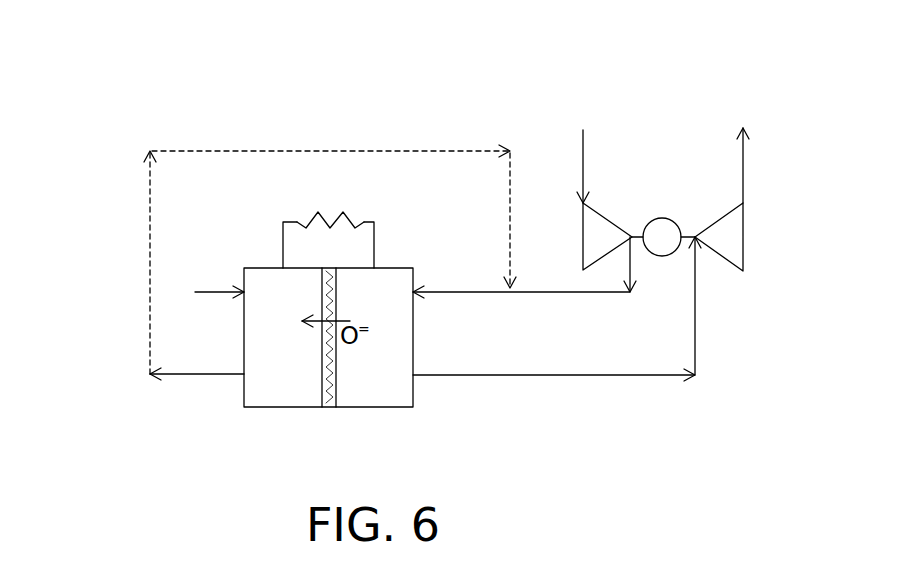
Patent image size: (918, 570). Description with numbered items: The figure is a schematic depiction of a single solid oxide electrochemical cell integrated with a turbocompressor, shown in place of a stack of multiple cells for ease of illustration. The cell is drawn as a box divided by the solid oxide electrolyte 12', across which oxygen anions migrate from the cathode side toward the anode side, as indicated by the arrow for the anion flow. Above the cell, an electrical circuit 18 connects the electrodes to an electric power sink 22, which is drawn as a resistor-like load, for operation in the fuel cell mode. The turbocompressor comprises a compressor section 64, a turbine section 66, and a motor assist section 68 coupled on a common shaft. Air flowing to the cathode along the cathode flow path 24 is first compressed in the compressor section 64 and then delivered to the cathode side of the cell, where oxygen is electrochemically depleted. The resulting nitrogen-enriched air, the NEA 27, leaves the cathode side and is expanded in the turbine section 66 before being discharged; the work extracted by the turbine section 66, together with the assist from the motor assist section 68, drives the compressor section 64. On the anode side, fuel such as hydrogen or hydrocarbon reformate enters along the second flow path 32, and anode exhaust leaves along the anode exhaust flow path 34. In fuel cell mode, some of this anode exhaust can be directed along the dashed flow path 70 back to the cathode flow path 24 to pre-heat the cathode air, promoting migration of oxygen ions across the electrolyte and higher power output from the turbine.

The solid oxide electrolyte 12' is at (404, 372).
The electrical circuit 18 is at (374, 238).
The electric power sink 22 is at (330, 210).
The cathode fluid flow path 24 is at (582, 160).
The NEA 27 is at (745, 167).
The second flow path 32 is at (212, 290).
The anode exhaust flow path 34 is at (200, 375).
The compressor section 64 is at (603, 215).
The turbine section 66 is at (722, 213).
The motor assist section 68 is at (662, 218).
The flow path 70 is at (150, 270).